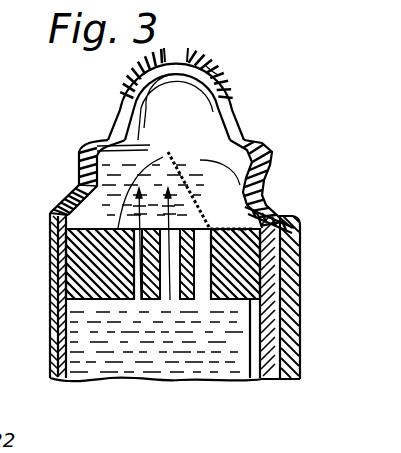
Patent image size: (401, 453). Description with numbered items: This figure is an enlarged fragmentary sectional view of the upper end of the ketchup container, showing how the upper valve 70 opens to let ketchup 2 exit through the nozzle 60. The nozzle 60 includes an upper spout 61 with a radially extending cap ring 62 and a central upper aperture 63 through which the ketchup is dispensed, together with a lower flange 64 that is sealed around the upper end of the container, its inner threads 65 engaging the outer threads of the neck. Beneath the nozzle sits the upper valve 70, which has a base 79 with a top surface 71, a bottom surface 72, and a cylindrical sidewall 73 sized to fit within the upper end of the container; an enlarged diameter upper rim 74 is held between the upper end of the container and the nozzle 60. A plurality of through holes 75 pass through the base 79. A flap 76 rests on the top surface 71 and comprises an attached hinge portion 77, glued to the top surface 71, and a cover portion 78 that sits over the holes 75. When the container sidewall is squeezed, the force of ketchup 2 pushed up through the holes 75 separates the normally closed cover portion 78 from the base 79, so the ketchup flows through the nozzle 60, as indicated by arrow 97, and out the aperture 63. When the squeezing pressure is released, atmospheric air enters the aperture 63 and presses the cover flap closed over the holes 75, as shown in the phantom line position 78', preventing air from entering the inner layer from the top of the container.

The ketchup 2 is at (198, 301).
The nozzle 60 is at (110, 79).
The upper spout 61 is at (226, 70).
The cap ring 62 is at (273, 153).
The central upper aperture 63 is at (182, 56).
The lower flange 64 is at (300, 266).
The inner threads 65 is at (248, 380).
The upper valve 70 is at (225, 322).
The top surface 71 is at (87, 208).
The bottom surface 72 is at (60, 356).
The cylindrical sidewall 73 is at (57, 275).
The enlarged diameter upper rim 74 is at (68, 242).
The through holes 75 is at (142, 301).
The flap 76 is at (197, 187).
The hinge portion 77 is at (263, 192).
The cover portion 78 is at (218, 161).
The phantom line position of cover flap 78' is at (63, 180).
The base 79 is at (288, 217).
The arrow showing ketchup flow 97 is at (156, 150).